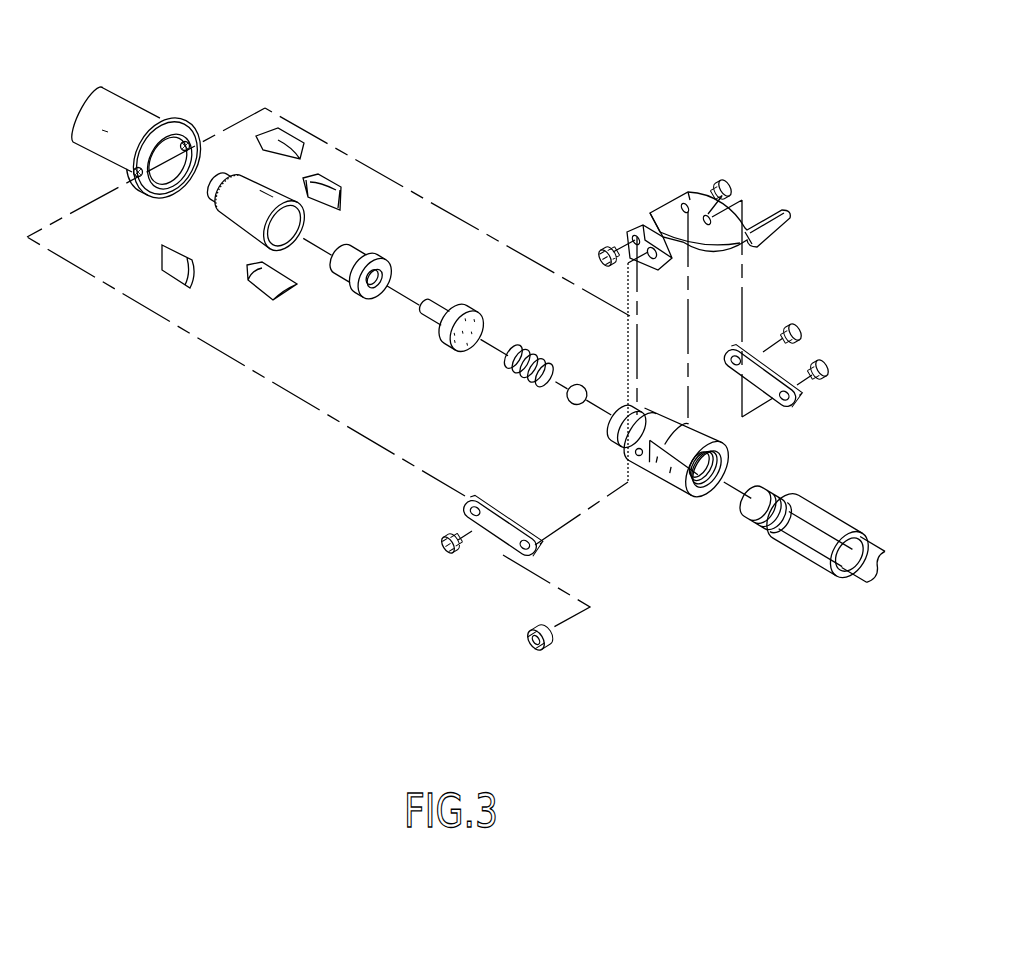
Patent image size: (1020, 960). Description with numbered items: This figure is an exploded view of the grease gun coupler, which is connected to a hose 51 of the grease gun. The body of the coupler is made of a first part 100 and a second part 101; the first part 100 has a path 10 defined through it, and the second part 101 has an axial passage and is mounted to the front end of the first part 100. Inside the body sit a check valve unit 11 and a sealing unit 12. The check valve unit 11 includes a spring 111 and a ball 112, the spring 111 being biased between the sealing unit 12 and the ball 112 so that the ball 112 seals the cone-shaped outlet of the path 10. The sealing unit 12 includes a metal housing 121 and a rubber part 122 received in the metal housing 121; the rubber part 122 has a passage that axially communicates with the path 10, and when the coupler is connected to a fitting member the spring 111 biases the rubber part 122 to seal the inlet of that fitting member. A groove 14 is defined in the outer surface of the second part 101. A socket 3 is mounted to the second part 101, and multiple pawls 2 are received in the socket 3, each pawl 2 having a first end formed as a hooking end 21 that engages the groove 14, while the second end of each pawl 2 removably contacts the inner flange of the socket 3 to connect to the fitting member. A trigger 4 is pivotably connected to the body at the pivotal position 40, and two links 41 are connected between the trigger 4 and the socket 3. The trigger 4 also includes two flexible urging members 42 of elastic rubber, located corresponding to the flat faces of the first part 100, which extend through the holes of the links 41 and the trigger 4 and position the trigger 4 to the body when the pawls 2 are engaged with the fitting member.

The socket 3 is at (132, 98).
The second part 101 is at (233, 177).
The groove 14 is at (213, 206).
The pawl 2 is at (160, 250).
The hooking end 21 is at (340, 205).
The sealing unit 12 is at (428, 317).
The metal housing 121 is at (372, 287).
The rubber part 122 is at (444, 326).
The path 10 is at (484, 331).
The check valve unit 11 is at (539, 416).
The spring 111 is at (517, 374).
The ball 112 is at (570, 414).
The first part 100 is at (690, 490).
The hose 51 is at (854, 580).
The trigger 4 is at (681, 190).
The pivotal position 40 is at (630, 238).
The link 41 is at (500, 536).
The urging member 42 is at (541, 660).